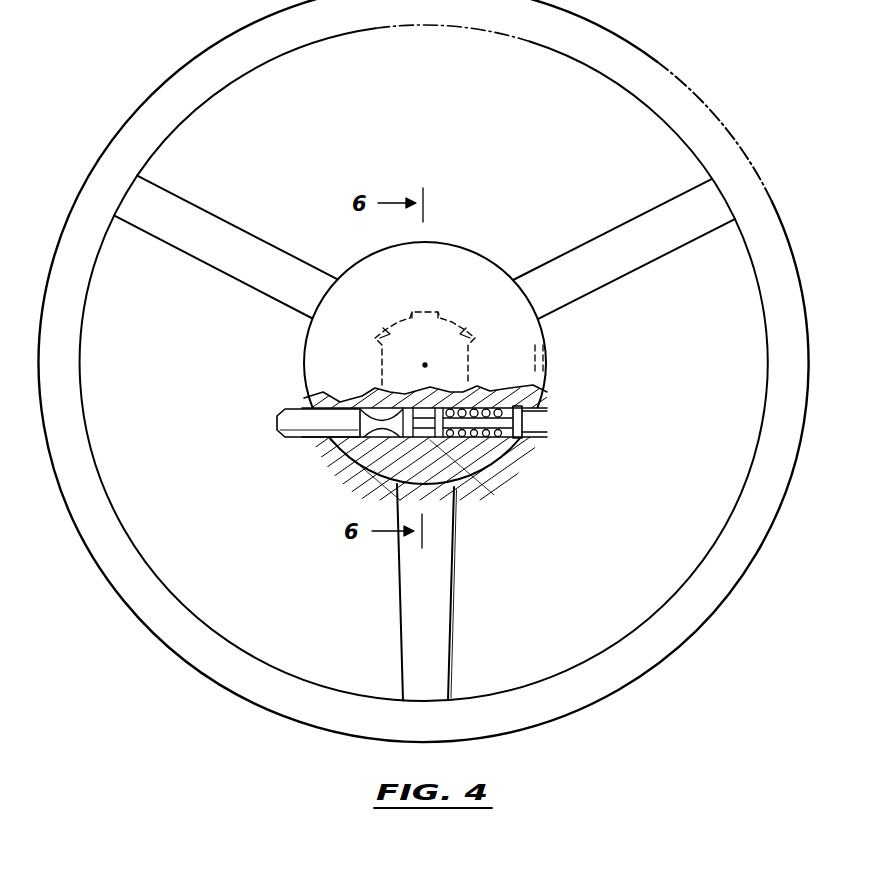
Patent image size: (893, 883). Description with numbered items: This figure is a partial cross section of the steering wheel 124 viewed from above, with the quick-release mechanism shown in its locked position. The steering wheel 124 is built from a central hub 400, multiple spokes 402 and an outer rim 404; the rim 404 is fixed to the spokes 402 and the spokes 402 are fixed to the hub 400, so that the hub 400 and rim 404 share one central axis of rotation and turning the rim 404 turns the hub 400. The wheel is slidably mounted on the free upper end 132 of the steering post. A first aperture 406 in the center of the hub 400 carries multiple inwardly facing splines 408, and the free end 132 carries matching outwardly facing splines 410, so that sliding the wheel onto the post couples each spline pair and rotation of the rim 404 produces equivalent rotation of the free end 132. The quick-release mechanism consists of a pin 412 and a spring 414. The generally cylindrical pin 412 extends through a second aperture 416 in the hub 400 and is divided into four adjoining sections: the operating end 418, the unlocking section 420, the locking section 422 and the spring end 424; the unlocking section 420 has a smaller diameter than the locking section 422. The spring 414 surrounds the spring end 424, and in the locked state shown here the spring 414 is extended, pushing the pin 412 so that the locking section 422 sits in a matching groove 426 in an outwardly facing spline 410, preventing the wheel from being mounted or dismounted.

The steering wheel 124 is at (660, 50).
The rim 404 is at (732, 156).
The spokes 402 is at (213, 216).
The hub 400 is at (374, 262).
The free upper end 132 is at (445, 328).
The first aperture 406 is at (405, 318).
The inwardly facing splines 408 is at (385, 334).
The outwardly facing splines 410 is at (478, 346).
The groove 426 is at (480, 338).
The pin 412 is at (272, 440).
The spring 414 is at (505, 450).
The second aperture 416 is at (544, 410).
The operating end 418 is at (278, 419).
The unlocking section 420 is at (362, 446).
The locking section 422 is at (455, 442).
The spring end 424 is at (548, 431).